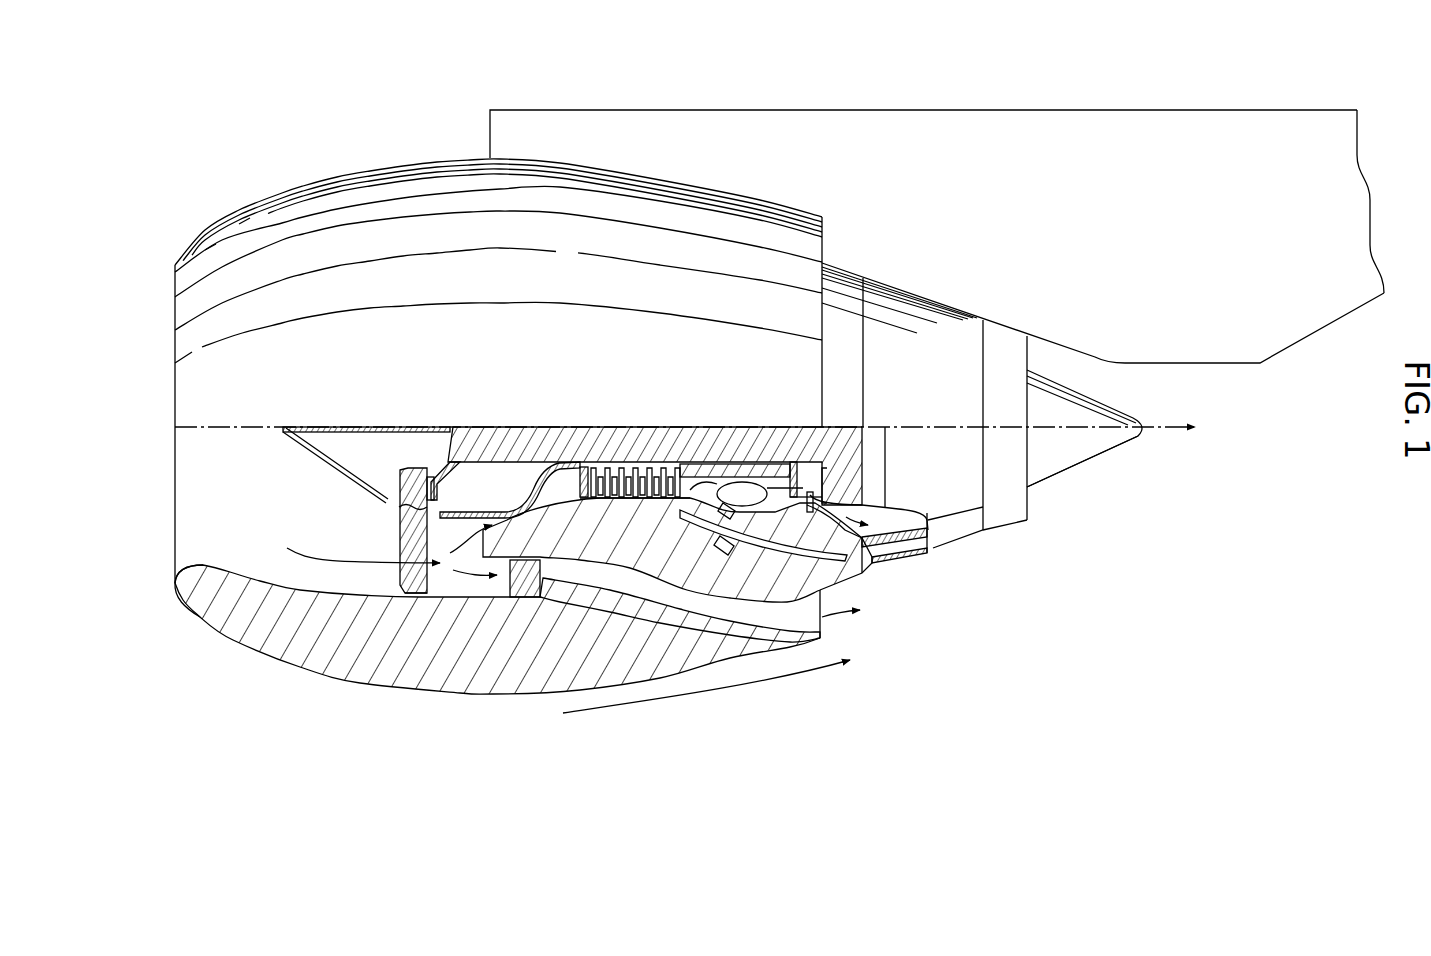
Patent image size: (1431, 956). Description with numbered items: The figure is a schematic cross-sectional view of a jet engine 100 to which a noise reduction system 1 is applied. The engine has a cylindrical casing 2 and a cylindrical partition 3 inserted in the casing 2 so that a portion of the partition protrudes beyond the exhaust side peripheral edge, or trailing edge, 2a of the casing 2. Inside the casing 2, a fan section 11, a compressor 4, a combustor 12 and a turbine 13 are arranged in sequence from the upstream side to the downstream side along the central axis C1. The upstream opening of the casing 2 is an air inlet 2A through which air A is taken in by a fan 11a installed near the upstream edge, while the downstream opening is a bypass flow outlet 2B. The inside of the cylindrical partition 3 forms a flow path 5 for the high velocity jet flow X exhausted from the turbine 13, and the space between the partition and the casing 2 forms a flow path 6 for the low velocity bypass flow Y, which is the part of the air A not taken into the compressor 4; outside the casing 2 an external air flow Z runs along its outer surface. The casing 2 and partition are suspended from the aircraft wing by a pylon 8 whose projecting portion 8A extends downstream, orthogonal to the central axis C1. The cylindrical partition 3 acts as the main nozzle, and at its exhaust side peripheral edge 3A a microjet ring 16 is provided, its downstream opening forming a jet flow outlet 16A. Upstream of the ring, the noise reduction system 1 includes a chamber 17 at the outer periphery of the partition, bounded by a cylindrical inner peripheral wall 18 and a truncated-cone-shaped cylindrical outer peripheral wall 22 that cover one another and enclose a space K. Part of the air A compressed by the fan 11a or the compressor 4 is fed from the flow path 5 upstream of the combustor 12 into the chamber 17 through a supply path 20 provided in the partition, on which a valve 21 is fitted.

The jet engine 100 is at (226, 183).
The cylindrical casing 2 is at (336, 196).
The air inlet 2A is at (173, 510).
The exhaust side peripheral edge (trailing edge) of the casing 2a is at (822, 252).
The bypass flow outlet 2B is at (822, 632).
The pylon 8 is at (700, 130).
The projecting portion 8A is at (1235, 205).
The cylindrical partition 3 is at (842, 333).
The exhaust side peripheral edge (trailing edge) of the cylindrical partition 3A is at (987, 512).
The noise reduction system 1 is at (1040, 218).
The chamber 17 is at (967, 311).
The microjet ring 16 is at (1017, 321).
The jet flow outlet 16A is at (1031, 492).
The central axis C1 is at (706, 427).
The fan section 11 is at (394, 476).
The fan 11a is at (410, 582).
The flow path 5 is at (560, 480).
The compressor 4 is at (600, 473).
The valve 21 is at (705, 487).
The combustor 12 is at (748, 487).
The turbine 13 is at (803, 463).
The supply path 20 is at (780, 563).
The flow path 6 is at (870, 578).
The cylindrical outer peripheral wall 22 is at (925, 553).
The cylindrical inner peripheral wall 18 is at (920, 520).
The space K is at (907, 547).
The air A is at (327, 557).
The jet flow X is at (870, 523).
The bypass flow Y is at (855, 607).
The external air flow Z is at (722, 677).